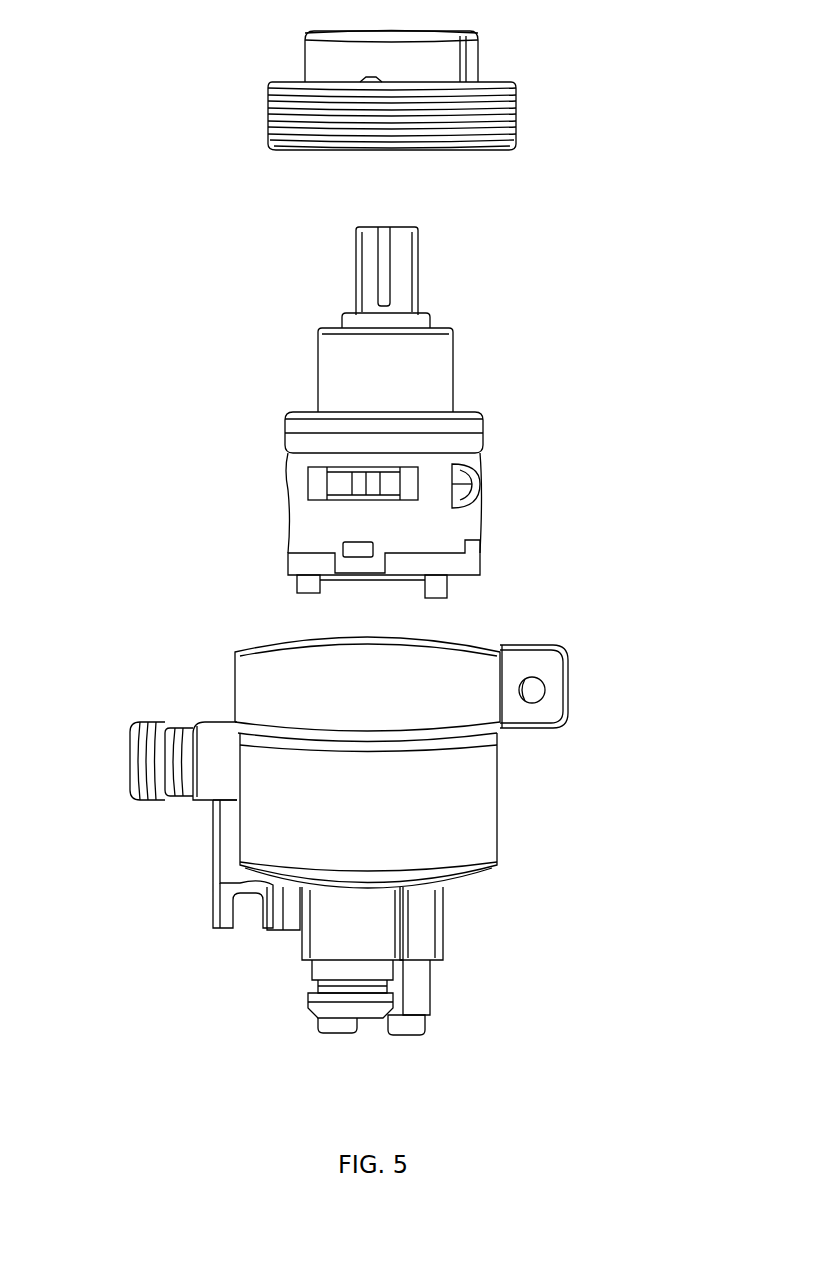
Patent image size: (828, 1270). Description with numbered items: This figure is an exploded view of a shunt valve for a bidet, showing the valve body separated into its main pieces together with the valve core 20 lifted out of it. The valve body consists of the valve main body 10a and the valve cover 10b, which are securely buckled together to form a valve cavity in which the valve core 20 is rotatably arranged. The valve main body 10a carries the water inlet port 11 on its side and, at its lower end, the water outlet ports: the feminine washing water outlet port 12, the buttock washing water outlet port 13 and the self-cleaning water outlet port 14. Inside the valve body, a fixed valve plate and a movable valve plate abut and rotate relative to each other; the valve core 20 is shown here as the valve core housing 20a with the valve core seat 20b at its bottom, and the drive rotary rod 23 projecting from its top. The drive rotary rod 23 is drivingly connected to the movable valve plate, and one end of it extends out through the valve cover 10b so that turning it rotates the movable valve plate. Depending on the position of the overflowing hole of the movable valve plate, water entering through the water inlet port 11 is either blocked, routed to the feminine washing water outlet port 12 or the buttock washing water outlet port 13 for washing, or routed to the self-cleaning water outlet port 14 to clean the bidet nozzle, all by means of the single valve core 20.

The valve main body 10a is at (367, 860).
The valve cover 10b is at (436, 66).
The water inlet port 11 is at (128, 756).
The feminine washing water outlet port 12 is at (330, 1033).
The buttock washing water outlet port 13 is at (405, 1035).
The self-cleaning water outlet port 14 is at (320, 1020).
The valve core 20 is at (499, 494).
The valve core housing 20a is at (437, 480).
The valve core seat 20b is at (468, 574).
The drive rotary rod 23 is at (393, 278).